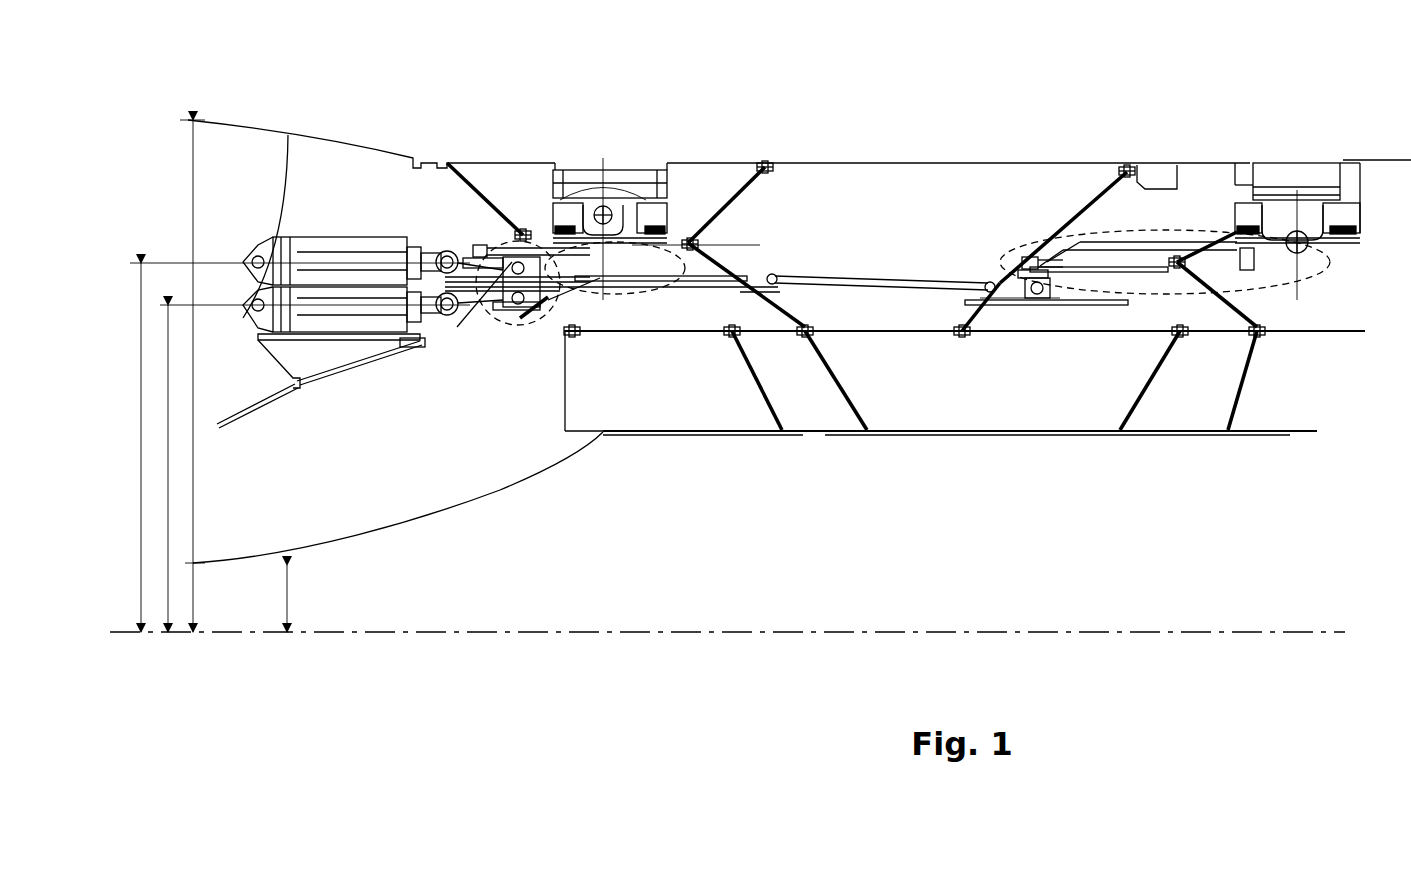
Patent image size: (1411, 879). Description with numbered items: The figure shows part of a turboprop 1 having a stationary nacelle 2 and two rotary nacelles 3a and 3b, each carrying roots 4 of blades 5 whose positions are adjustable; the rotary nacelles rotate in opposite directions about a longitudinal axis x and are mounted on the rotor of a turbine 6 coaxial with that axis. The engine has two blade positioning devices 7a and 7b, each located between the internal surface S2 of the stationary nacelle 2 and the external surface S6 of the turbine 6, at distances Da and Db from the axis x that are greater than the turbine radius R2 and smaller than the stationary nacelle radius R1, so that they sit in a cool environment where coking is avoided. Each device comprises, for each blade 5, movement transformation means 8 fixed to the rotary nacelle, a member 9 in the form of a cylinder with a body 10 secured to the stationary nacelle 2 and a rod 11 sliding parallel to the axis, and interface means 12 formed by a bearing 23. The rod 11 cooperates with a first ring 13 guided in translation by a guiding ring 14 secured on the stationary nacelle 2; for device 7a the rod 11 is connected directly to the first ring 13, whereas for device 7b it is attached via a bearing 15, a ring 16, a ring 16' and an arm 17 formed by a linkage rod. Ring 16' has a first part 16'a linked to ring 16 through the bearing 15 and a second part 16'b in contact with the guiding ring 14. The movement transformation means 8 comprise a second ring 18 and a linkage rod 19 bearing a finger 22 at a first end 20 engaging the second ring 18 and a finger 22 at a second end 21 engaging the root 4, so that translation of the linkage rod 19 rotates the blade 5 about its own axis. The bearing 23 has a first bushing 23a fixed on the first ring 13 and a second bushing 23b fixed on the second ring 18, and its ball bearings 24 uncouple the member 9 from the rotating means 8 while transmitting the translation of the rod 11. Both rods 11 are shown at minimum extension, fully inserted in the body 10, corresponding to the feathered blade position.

The turboprop 1 is at (240, 92).
The stationary nacelle 2 is at (386, 157).
The rotary nacelle 3a is at (790, 163).
The rotary nacelle 3b is at (1180, 165).
The root 4 is at (660, 166).
The blade 5 is at (758, 128).
The turbine 6 is at (360, 528).
The blade positioning device 7a is at (205, 212).
The blade positioning device 7b is at (218, 380).
The movement transformation means 8 is at (490, 212).
The member 9 is at (294, 295).
The body 10 is at (243, 316).
The rod 11 is at (378, 255).
The interface means 12 is at (850, 264).
The bearing 23 is at (545, 198).
The first ring 13 is at (590, 332).
The guiding ring 14 is at (605, 300).
The bearing 15 is at (548, 320).
The ring 16 is at (560, 301).
The ring 16' is at (611, 333).
The first part 16'a is at (517, 337).
The second part 16'b is at (563, 344).
The arm 17 is at (845, 275).
The second ring 18 is at (512, 240).
The linkage rod 19 is at (482, 255).
The first end 20 is at (490, 262).
The second end 21 is at (642, 248).
The finger 22 is at (470, 248).
The first bushing 23a is at (520, 305).
The second bushing 23b is at (485, 302).
The ball bearings 24 is at (535, 260).
The radius of the stationary nacelle R1 is at (193, 168).
The radius of turbine R2 is at (287, 592).
The distance Da is at (141, 455).
The distance Db is at (168, 532).
The internal surface S2 is at (290, 138).
The external surface S6 is at (440, 525).
The longitudinal axis x is at (1138, 632).